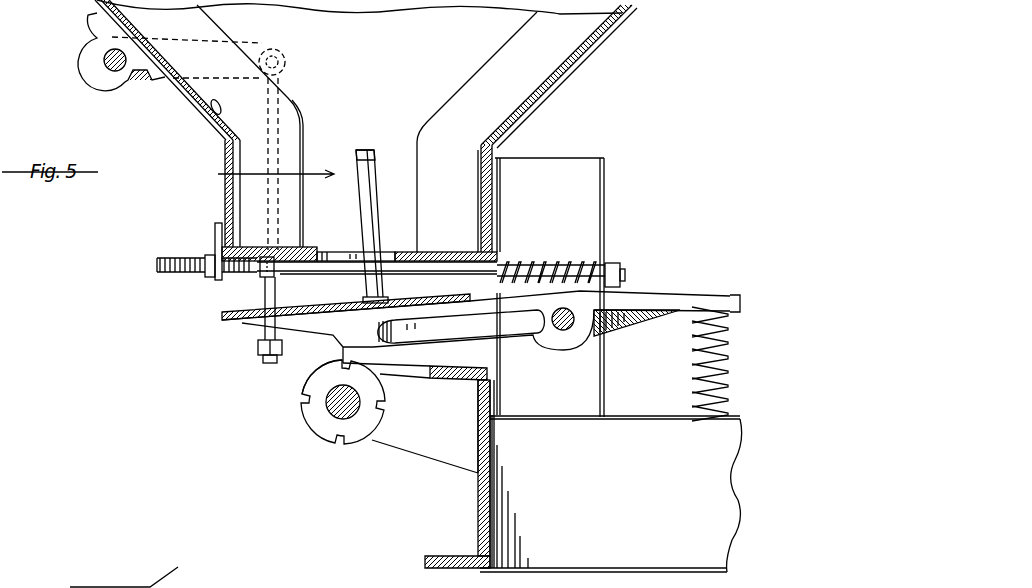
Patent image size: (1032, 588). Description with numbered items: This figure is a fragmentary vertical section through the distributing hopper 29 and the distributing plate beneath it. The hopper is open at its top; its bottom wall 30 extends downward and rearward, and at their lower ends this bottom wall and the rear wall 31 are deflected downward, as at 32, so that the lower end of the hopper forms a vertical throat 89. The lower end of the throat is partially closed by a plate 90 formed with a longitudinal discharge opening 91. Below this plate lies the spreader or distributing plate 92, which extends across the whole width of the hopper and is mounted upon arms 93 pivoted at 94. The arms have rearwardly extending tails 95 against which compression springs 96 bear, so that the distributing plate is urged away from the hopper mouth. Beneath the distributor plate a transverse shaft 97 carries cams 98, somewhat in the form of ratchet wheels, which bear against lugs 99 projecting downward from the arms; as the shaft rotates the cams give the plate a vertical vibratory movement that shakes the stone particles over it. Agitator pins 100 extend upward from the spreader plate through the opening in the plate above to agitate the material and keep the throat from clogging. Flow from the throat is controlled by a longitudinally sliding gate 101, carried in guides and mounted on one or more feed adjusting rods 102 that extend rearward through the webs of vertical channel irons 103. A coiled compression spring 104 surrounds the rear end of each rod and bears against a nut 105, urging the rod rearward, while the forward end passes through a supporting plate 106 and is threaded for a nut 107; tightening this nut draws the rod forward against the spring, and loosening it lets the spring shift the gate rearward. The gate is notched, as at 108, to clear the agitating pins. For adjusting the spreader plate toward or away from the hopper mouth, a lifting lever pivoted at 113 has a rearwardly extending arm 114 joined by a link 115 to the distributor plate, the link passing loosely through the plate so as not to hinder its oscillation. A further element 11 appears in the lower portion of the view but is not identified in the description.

The housing 11 is at (478, 503).
The distributing hopper 29 is at (555, 32).
The bottom wall of the hopper 30 is at (212, 114).
The rear wall 31 is at (526, 107).
The deflected lower ends 32 is at (224, 198).
The throat 89 is at (263, 174).
The plate 90 is at (265, 243).
The discharge opening 91 is at (329, 249).
The spreader or distributing plate 92 is at (222, 321).
The arms 93 is at (447, 308).
The pivot 94 is at (563, 330).
The rearwardly extending tails 95 is at (665, 297).
The compression springs 96 is at (693, 381).
The shaft 97 is at (338, 415).
The cams 98 is at (302, 410).
The lugs 99 is at (340, 342).
The agitator pins 100 is at (374, 157).
The sliding gate 101 is at (305, 276).
The feed adjusting rods 102 is at (155, 271).
The channel irons 103 is at (502, 194).
The coiled compression spring 104 is at (527, 260).
The nut 105 is at (640, 248).
The supporting plate 106 is at (217, 281).
The nut 107 is at (213, 246).
The notches 108 is at (348, 252).
The pivot of the lifting lever 113 is at (104, 62).
The rearwardly extending arm 114 is at (200, 40).
The link 115 is at (293, 103).